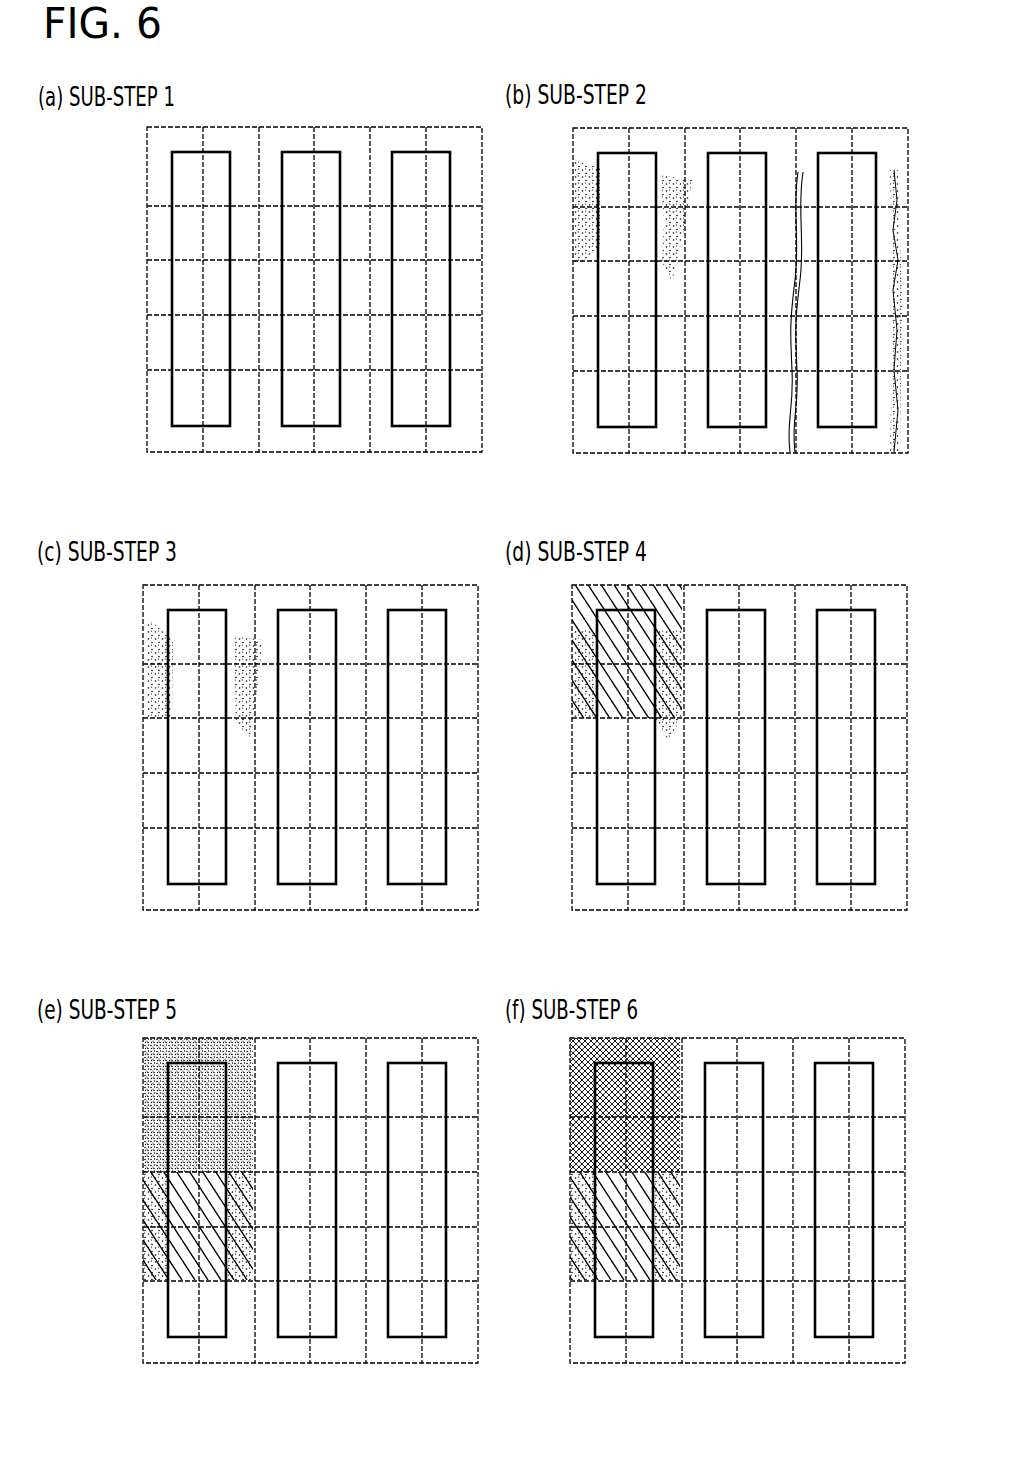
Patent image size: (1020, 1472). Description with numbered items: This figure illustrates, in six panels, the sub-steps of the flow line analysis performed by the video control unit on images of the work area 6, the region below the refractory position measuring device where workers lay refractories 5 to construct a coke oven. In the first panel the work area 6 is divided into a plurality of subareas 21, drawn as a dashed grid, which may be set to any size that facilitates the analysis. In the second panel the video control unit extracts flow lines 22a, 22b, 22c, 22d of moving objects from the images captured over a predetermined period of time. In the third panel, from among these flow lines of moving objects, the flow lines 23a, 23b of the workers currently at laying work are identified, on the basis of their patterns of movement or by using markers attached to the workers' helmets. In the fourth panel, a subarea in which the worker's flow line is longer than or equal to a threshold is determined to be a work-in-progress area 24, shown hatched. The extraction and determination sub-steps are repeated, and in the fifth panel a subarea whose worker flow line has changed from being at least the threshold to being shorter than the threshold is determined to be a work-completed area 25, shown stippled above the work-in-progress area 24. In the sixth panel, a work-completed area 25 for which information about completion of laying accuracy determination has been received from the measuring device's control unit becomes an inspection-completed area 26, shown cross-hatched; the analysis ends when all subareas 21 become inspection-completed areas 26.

The refractories 5 is at (172, 172).
The work area 6 is at (145, 272).
The subareas 21 is at (325, 126).
The flow line of moving object 22a is at (578, 161).
The flow line of moving object 22b is at (667, 178).
The flow line of moving object 22c is at (798, 175).
The flow line of moving object 22d is at (895, 168).
The flow line of worker 23a is at (150, 615).
The flow line of worker 23b is at (243, 630).
The work-in-progress area 24 is at (660, 597).
The work-completed area 25 is at (223, 1053).
The inspection-completed area 26 is at (660, 1053).